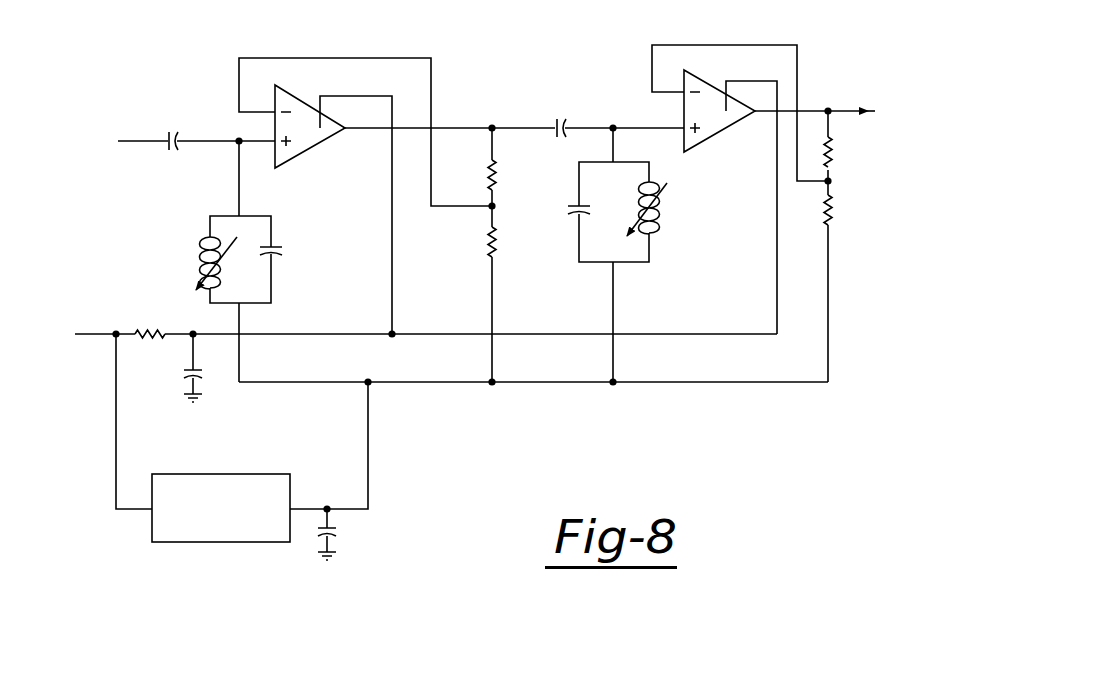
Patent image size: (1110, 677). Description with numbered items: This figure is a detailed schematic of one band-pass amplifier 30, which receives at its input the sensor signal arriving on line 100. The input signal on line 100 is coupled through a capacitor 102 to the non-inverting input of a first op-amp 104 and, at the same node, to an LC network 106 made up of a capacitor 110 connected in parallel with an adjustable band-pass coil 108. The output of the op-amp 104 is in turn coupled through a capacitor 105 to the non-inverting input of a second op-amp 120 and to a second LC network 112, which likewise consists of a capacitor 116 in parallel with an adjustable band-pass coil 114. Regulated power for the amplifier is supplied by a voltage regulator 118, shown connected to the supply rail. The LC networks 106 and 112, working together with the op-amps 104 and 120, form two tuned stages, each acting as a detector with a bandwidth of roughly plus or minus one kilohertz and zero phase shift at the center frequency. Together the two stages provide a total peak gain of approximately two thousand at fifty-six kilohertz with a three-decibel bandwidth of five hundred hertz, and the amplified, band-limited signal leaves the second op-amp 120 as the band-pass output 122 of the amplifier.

The band-pass amplifier 30 is at (552, 62).
The line 100 is at (126, 146).
The capacitor 102 is at (178, 134).
The op-amp 104 is at (322, 146).
The capacitor 105 is at (607, 82).
The LC network 106 is at (199, 238).
The adjustable band-pass coil 108 is at (201, 256).
The capacitor 110 is at (281, 246).
The second LC network 112 is at (660, 259).
The adjustable band-pass coil 114 is at (656, 222).
The capacitor 116 is at (576, 214).
The voltage regulator 118 is at (222, 543).
The second op-amp 120 is at (712, 136).
The band pass output 122 is at (838, 108).